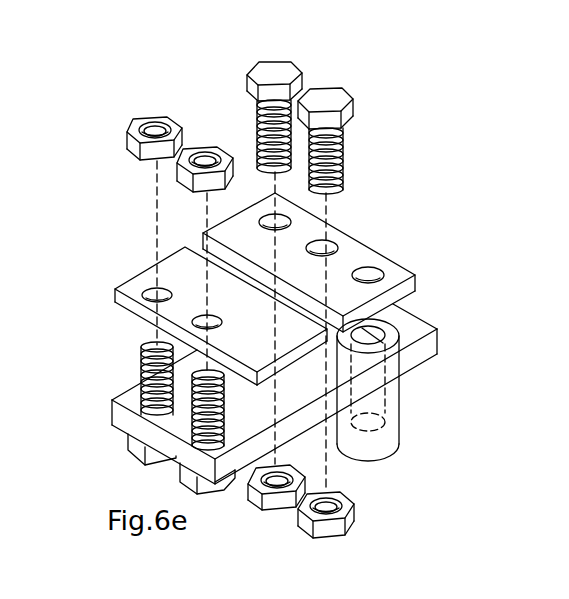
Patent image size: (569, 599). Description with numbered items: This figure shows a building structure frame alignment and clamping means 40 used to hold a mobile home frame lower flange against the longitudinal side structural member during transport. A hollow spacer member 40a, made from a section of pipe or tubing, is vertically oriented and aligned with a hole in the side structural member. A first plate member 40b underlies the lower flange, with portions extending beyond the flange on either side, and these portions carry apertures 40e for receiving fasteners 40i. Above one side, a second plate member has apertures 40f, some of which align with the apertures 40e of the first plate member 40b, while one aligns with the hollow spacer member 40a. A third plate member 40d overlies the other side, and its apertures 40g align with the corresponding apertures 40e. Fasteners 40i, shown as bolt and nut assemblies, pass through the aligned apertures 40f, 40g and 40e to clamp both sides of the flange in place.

The building structure frame alignment and clamping means 40 is at (376, 162).
The hollow spacer member 40a is at (399, 426).
The first plate member 40b is at (418, 322).
The third plate member 40d is at (126, 289).
The apertures 40e is at (438, 360).
The apertures 40f is at (372, 270).
The apertures 40g is at (130, 303).
The fasteners 40i is at (266, 68).